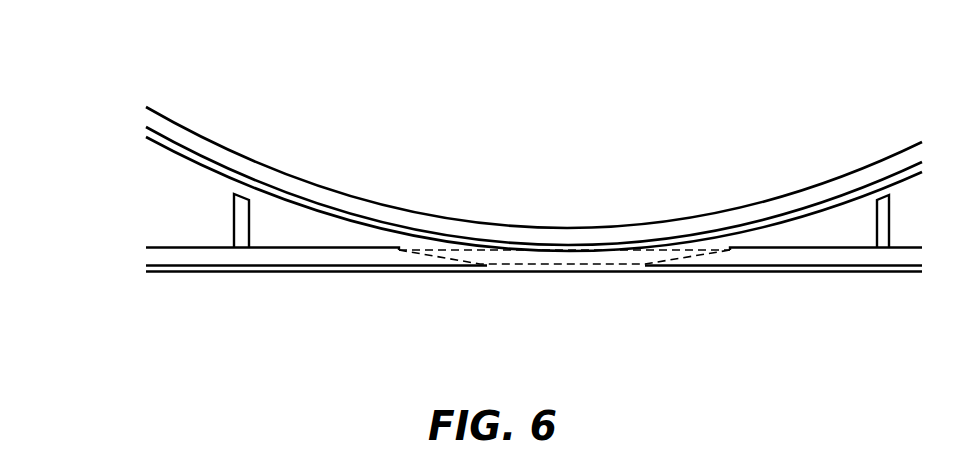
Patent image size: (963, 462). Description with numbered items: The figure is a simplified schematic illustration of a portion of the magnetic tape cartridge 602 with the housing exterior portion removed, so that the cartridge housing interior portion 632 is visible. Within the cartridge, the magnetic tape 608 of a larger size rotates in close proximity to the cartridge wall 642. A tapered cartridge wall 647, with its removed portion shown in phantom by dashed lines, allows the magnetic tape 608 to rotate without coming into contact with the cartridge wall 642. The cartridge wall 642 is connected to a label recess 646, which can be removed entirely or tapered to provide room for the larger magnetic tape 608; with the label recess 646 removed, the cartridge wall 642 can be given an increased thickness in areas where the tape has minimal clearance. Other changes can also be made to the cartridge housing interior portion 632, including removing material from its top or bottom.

The magnetic tape cartridge 602 is at (104, 94).
The magnetic tape 608 is at (658, 185).
The cartridge housing interior portion 632 is at (178, 223).
The cartridge wall 642 is at (353, 255).
The label recess 646 is at (269, 266).
The tapered cartridge wall 647 is at (497, 264).